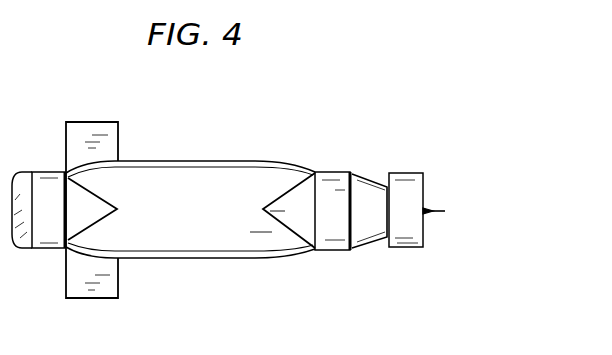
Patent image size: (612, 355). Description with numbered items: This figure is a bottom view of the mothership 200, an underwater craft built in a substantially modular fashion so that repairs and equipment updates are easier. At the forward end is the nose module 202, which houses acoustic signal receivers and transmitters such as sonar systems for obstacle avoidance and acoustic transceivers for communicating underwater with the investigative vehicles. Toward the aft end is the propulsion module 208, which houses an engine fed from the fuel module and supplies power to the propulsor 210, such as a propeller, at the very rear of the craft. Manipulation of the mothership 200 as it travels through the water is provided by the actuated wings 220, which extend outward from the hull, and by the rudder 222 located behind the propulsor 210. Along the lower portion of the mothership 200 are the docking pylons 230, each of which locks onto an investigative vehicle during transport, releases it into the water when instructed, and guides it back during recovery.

The mothership 200 is at (306, 92).
The nose module 202 is at (33, 172).
The propulsion module 208 is at (327, 172).
The propulsor 210 is at (403, 173).
The actuated wings 220 is at (79, 122).
The rudder 222 is at (434, 214).
The docking pylons 230 is at (198, 161).